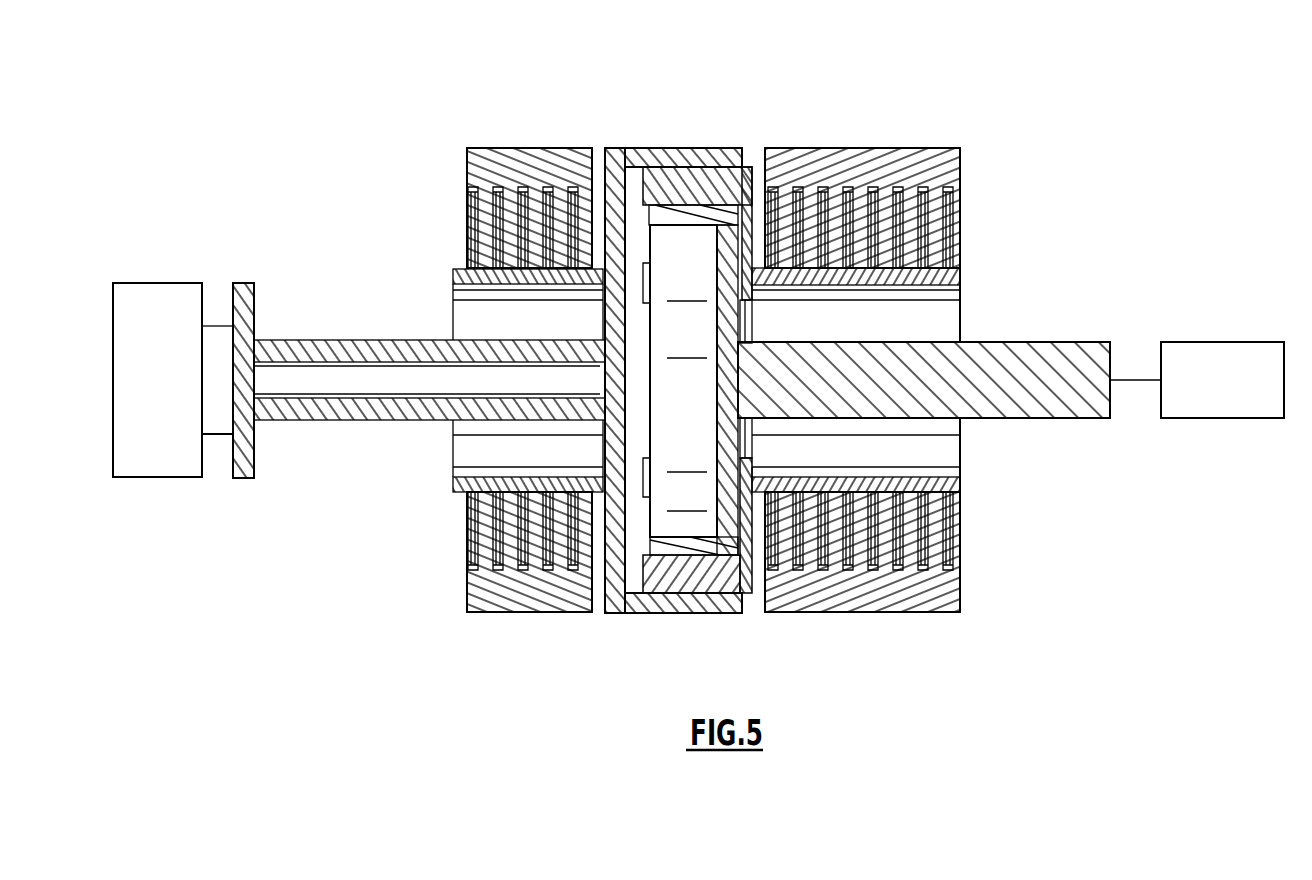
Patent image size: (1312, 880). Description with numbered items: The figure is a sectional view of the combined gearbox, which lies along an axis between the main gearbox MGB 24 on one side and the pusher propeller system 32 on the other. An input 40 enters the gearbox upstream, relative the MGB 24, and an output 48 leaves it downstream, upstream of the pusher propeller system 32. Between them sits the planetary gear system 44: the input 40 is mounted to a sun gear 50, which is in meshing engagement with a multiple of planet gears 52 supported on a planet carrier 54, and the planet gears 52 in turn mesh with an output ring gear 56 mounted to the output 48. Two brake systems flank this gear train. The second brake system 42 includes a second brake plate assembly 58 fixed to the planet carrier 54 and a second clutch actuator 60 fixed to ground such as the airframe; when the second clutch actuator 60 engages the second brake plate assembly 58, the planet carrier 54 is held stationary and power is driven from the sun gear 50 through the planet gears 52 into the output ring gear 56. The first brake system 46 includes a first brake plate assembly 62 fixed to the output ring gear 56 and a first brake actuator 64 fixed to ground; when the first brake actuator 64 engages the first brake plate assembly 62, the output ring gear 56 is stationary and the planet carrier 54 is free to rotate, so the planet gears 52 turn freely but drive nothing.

The MGB 24 is at (1226, 342).
The pusher propeller system 32 is at (172, 390).
The input 40 is at (1073, 309).
The second brake system 42 is at (888, 120).
The planetary gear system 44 is at (668, 351).
The first brake system 46 is at (519, 128).
The output 48 is at (348, 213).
The sun gear 50 is at (668, 226).
The planet gears 52 is at (693, 585).
The planet carrier 54 is at (756, 584).
The output ring gear 56 is at (615, 601).
The second brake plate assembly 58 is at (960, 483).
The second clutch actuator 60 is at (885, 600).
The first brake plate assembly 62 is at (453, 488).
The first brake actuator 64 is at (518, 600).